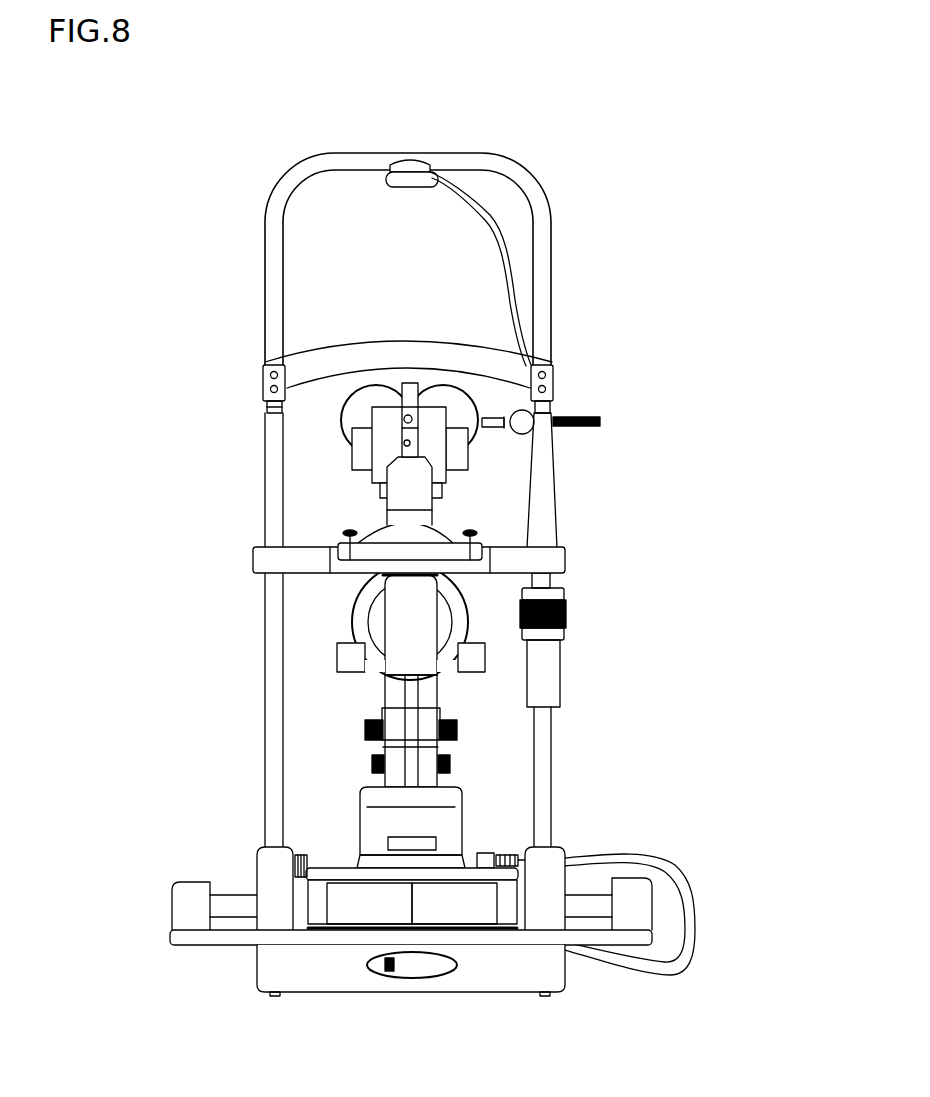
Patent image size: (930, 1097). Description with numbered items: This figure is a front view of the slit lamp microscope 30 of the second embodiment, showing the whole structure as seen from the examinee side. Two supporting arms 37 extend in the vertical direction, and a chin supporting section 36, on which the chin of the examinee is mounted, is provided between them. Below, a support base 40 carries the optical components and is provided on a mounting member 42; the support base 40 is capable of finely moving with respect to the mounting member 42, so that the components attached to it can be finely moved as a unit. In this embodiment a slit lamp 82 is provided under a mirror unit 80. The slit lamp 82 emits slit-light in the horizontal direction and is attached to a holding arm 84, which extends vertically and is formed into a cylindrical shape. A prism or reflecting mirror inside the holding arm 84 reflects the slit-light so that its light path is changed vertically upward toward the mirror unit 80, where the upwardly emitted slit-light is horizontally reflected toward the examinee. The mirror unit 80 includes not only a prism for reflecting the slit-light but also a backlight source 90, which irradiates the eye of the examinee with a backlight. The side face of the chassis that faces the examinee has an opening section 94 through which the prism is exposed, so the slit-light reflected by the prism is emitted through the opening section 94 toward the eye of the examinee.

The slit lamp microscope 30 is at (571, 152).
The chin supporting section 36 is at (410, 553).
The supporting arm 37 is at (268, 770).
The support base 40 is at (460, 812).
The mounting member 42 is at (332, 877).
The mirror unit 80 is at (300, 435).
The slit lamp 82 is at (300, 675).
The holding arm 84 is at (400, 602).
The backlight source 90 is at (405, 420).
The opening section 94 is at (404, 443).